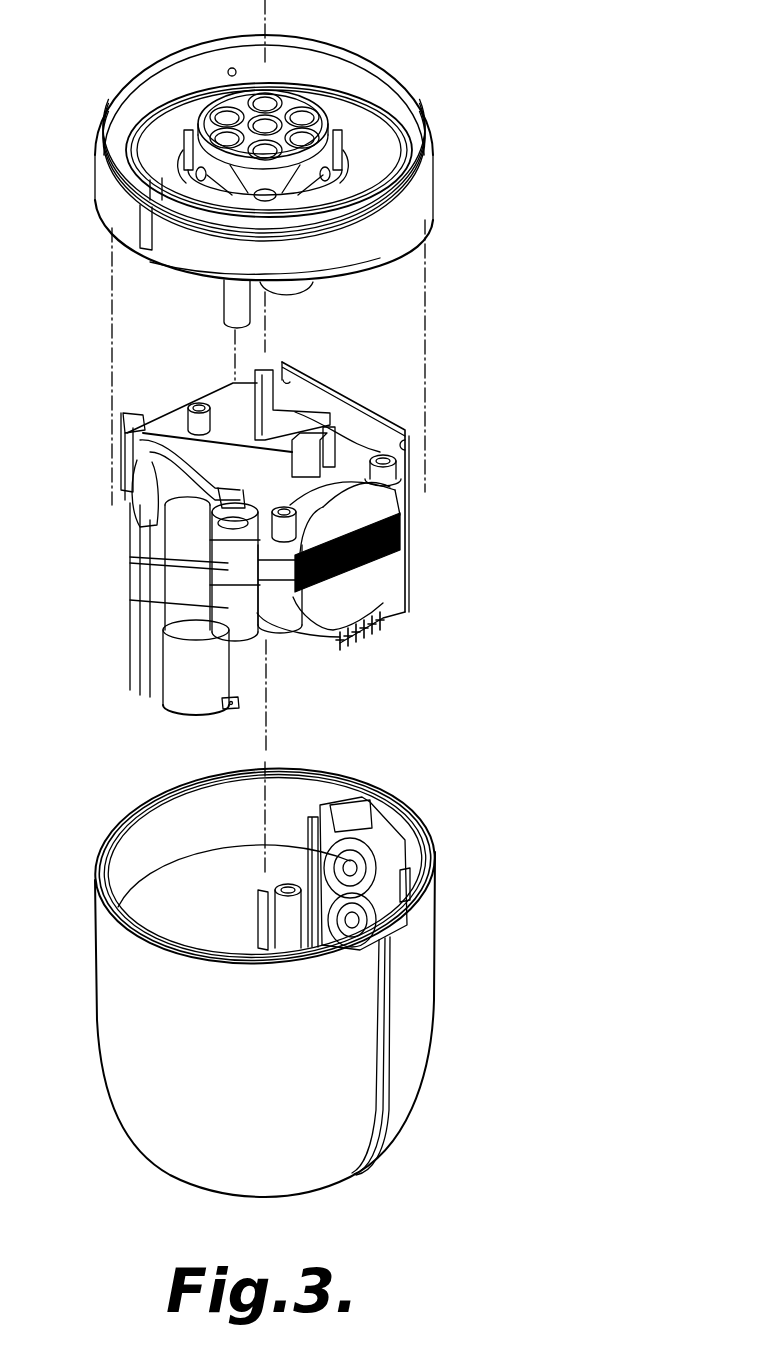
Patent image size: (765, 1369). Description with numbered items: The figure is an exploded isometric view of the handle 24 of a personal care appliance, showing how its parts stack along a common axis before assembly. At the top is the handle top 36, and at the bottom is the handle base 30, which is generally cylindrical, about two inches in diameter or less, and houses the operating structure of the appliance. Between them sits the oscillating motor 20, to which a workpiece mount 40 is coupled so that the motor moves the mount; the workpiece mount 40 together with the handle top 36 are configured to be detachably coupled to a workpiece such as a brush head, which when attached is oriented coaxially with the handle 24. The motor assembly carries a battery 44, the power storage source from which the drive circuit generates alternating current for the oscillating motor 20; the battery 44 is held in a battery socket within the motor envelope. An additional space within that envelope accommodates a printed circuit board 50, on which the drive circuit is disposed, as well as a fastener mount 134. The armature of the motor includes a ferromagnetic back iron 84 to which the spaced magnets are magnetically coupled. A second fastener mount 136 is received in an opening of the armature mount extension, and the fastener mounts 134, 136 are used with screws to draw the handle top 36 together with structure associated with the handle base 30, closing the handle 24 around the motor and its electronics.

The oscillating motor 20 is at (147, 470).
The handle 24 is at (545, 583).
The handle base 30 is at (428, 995).
The handle top 36 is at (432, 167).
The workpiece mount 40 is at (202, 112).
The battery 44 is at (187, 700).
The printed circuit board 50 is at (348, 410).
The back iron 84 is at (265, 320).
The fastener mount 134 is at (252, 926).
The fastener mount 136 is at (232, 302).